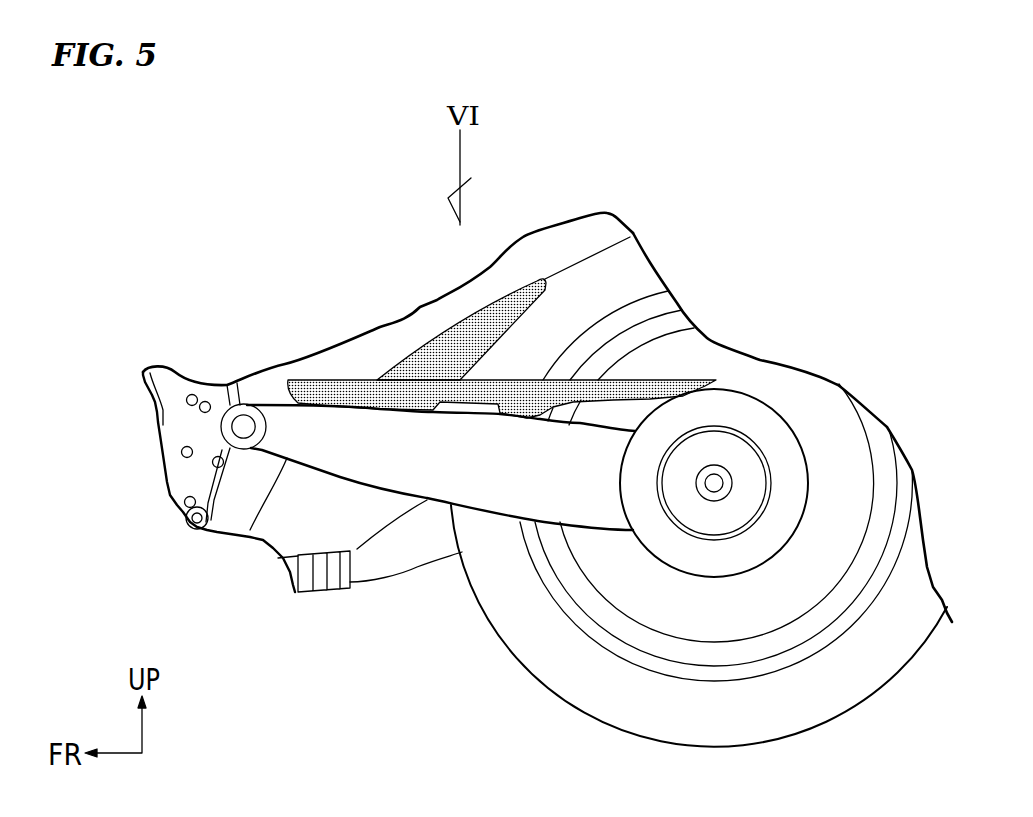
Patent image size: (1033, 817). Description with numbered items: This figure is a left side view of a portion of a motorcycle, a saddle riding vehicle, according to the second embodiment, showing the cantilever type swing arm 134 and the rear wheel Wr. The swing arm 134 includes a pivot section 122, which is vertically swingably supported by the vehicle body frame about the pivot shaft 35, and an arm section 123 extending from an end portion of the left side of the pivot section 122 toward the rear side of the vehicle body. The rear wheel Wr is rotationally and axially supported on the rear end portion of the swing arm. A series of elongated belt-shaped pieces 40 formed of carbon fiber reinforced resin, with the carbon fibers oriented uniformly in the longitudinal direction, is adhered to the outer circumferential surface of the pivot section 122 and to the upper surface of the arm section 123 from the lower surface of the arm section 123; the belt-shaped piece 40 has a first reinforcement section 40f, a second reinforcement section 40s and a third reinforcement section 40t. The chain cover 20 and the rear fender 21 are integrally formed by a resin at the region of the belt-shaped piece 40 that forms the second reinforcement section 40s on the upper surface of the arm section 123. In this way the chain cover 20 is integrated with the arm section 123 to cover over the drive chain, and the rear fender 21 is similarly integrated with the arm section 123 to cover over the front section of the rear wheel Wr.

The chain cover 20 is at (580, 380).
The rear fender 21 is at (421, 340).
The pivot shaft 35 is at (245, 422).
The belt-shaped piece 40 is at (613, 430).
The second reinforcement section 40s is at (598, 424).
The third reinforcement section 40t is at (227, 438).
The first reinforcement section 40f is at (310, 468).
The pivot section 122 is at (229, 398).
The arm section 123 is at (383, 453).
The swing arm 134 is at (278, 408).
The rear wheel Wr is at (858, 683).